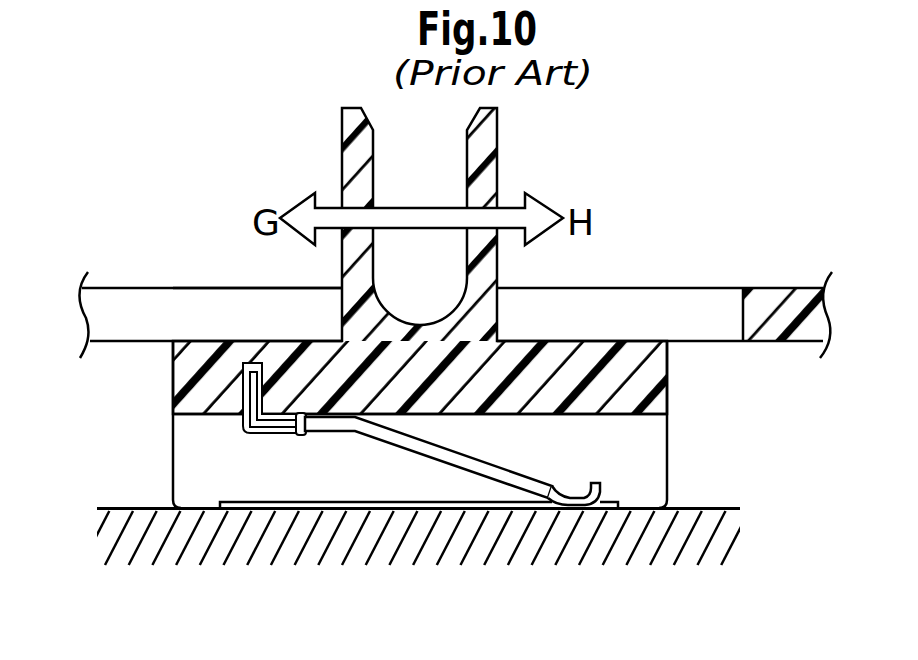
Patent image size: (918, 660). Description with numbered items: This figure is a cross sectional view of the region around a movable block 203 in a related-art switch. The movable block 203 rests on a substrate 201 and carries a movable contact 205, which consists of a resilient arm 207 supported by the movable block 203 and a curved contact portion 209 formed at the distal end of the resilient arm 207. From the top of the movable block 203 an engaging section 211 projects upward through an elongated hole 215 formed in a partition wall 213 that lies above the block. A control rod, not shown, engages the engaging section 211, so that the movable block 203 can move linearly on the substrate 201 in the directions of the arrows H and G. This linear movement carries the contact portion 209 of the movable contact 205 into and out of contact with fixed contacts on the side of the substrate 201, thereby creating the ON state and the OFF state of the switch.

The substrate 201 is at (710, 508).
The movable block 203 is at (655, 331).
The movable contact 205 is at (421, 468).
The resilient arm 207 is at (469, 470).
The contact portion 209 is at (571, 505).
The engaging section 211 is at (497, 164).
The partition wall 213 is at (128, 288).
The elongated hole 215 is at (203, 288).